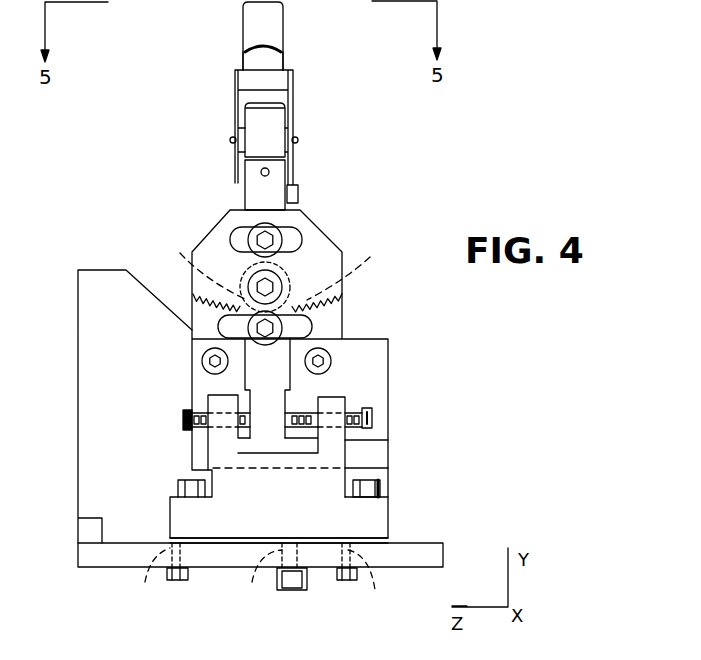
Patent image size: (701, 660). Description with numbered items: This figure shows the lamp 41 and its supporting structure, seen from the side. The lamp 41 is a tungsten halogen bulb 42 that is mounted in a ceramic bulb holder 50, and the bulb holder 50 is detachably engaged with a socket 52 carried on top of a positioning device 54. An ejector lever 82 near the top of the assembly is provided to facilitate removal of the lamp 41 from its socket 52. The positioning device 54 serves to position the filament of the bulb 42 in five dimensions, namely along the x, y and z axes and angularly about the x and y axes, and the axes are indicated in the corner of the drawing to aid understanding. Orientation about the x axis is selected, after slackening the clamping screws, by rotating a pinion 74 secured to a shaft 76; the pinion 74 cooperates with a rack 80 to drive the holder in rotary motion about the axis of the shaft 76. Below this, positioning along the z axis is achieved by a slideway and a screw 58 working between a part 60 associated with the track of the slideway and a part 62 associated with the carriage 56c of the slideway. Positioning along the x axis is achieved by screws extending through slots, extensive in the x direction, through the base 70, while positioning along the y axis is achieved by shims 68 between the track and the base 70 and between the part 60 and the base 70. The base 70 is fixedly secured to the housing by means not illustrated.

The lamp 41 is at (222, 50).
The tungsten halogen bulb 42 is at (275, 36).
The ejector lever 82 is at (258, 63).
The ceramic bulb holder 50 is at (267, 113).
The socket 52 is at (258, 191).
The positioning device 54 is at (410, 336).
The pinion 74 is at (198, 270).
The shaft 76 is at (282, 288).
The rack 80 is at (353, 272).
The screw 58 is at (306, 414).
The carriage 56c is at (378, 453).
The part associated with the carriage 62 is at (263, 413).
The part associated with the track 60 is at (330, 433).
The shims 68 is at (310, 540).
The base 70 is at (113, 558).